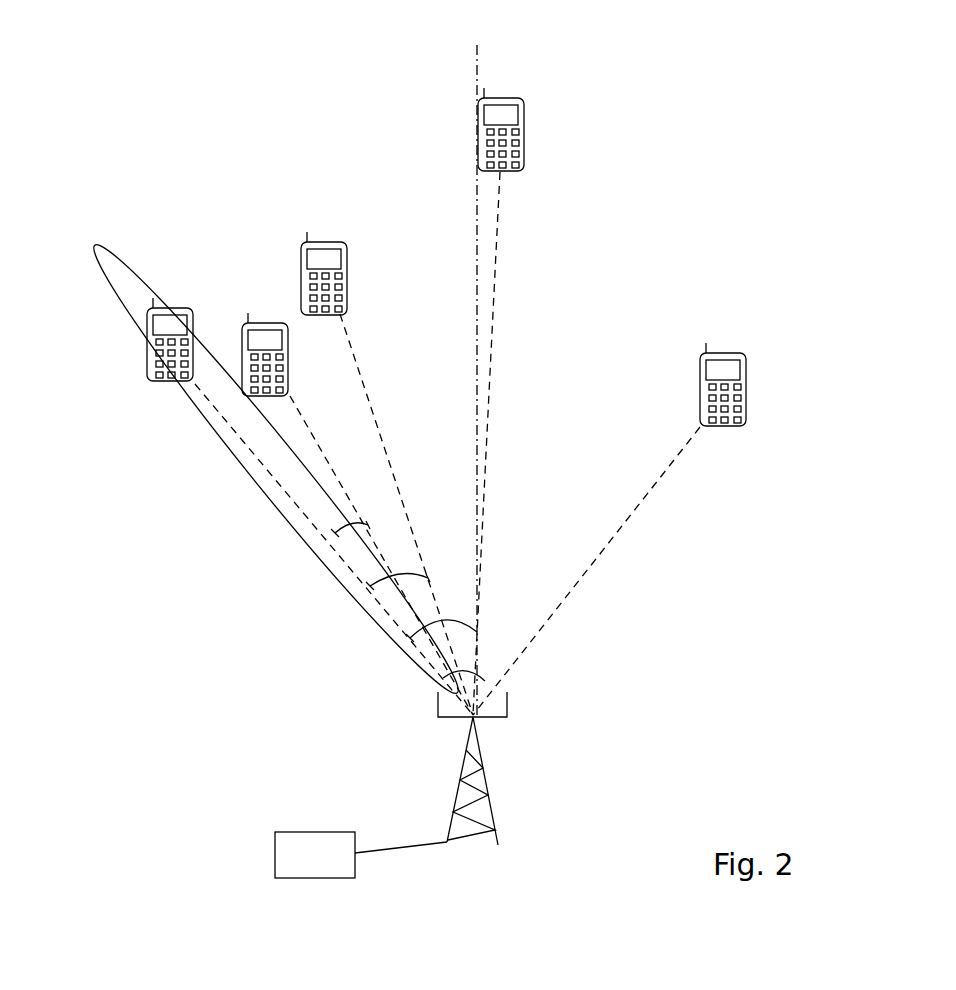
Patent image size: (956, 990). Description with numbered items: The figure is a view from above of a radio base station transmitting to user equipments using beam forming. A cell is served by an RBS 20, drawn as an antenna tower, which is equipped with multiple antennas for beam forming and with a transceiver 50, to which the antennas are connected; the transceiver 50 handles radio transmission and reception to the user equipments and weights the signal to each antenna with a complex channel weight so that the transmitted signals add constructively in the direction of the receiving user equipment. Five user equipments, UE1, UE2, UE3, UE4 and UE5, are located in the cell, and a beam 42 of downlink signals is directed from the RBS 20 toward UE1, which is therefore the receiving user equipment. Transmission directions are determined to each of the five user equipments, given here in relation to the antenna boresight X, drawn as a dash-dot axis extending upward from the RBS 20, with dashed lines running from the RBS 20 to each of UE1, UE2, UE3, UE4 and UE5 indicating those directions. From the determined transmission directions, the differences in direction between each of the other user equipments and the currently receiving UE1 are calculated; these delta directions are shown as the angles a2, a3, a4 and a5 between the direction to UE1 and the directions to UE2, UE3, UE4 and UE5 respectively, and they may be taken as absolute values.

The beam 42 is at (97, 247).
The RBS 20 is at (490, 800).
The transceiver 50 is at (293, 878).
The element UE1 is at (276, 506).
The element UE2 is at (387, 473).
The element UE3 is at (528, 401).
The element UE4 is at (638, 529).
The element UE5 is at (357, 514).
The antenna boresight X is at (476, 359).
The delta direction a2 is at (398, 562).
The delta direction a3 is at (441, 616).
The delta direction a4 is at (473, 658).
The delta direction a5 is at (336, 514).